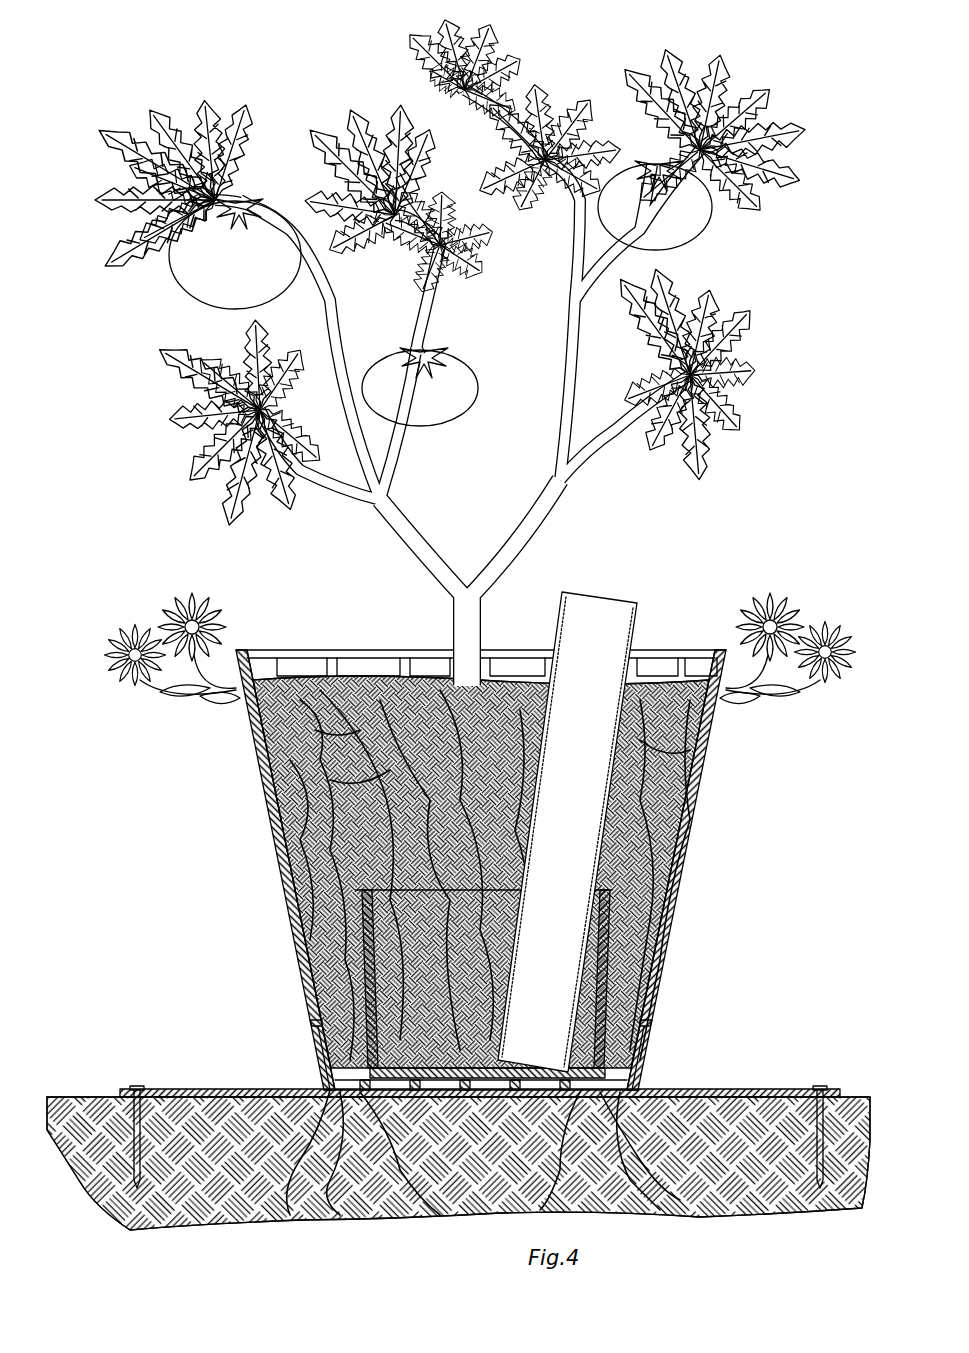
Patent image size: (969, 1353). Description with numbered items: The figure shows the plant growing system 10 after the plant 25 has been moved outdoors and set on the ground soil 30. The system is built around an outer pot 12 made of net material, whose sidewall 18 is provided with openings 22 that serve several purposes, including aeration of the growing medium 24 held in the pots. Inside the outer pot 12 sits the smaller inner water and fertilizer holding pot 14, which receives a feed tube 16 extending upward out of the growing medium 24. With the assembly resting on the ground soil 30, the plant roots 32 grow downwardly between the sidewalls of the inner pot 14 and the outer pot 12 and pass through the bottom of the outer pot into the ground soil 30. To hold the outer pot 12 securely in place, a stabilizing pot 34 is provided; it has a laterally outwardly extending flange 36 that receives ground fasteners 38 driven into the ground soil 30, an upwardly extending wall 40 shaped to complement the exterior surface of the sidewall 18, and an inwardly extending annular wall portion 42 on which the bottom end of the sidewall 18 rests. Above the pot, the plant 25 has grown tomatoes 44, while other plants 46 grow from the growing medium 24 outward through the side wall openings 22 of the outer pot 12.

The plant growing system 10 is at (173, 544).
The outer pot 12 is at (465, 836).
The inner water and fertilizer holding pot 14 is at (302, 975).
The feed tube 16 is at (610, 605).
The sidewall 18 is at (706, 815).
The openings 22 is at (300, 668).
The growing medium 24 is at (372, 690).
The plant 25 is at (449, 351).
The ground soil 30 is at (100, 1093).
The plant roots 32 is at (405, 690).
The stabilizing pot 34 is at (243, 1089).
The laterally outwardly extending flange 36 is at (200, 1090).
The ground fasteners 38 is at (135, 1150).
The upwardly extending wall 40 is at (318, 1040).
The inwardly extending annular wall portion 42 is at (312, 1008).
The tomatoes 44 is at (690, 228).
The other plants 46 is at (140, 632).